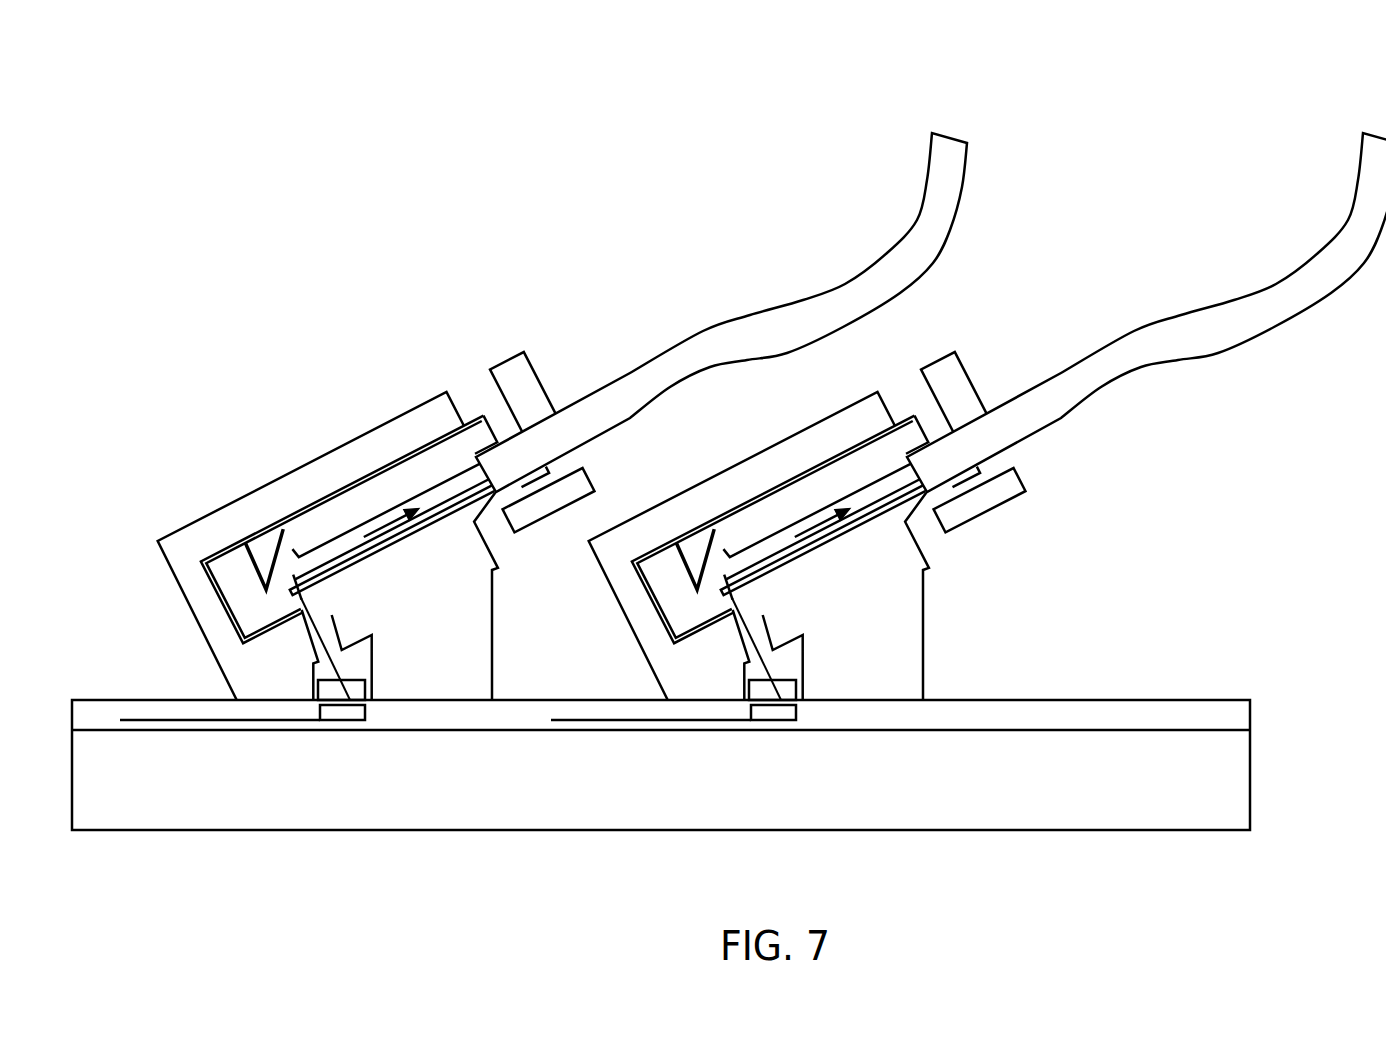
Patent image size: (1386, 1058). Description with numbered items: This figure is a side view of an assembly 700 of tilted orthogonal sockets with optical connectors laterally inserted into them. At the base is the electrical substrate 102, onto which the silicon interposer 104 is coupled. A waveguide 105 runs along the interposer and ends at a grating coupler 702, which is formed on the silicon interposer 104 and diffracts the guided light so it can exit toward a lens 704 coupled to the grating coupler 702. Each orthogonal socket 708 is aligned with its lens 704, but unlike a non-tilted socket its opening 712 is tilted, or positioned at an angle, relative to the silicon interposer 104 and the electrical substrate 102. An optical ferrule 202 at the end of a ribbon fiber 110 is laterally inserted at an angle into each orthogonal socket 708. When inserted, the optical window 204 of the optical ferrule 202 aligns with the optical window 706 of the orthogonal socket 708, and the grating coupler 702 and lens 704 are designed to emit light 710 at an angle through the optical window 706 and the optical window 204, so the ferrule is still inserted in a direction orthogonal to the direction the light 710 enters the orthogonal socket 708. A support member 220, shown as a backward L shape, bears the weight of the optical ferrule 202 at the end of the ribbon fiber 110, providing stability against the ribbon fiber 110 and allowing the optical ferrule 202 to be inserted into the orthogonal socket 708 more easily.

The tilted orthogonal sockets with optical connectors laterally inserted 700 is at (137, 72).
The electrical substrate 102 is at (681, 795).
The silicon interposer 104 is at (1255, 712).
The waveguide 105 is at (158, 722).
The ribbon fiber 110 is at (695, 335).
The optical ferrule 202 is at (477, 418).
The optical window 204 is at (243, 627).
The support member 220 is at (541, 380).
The grating coupler 702 is at (348, 722).
The lens 704 is at (370, 683).
The optical window 706 is at (325, 622).
The orthogonal socket 708 is at (340, 440).
The light 710 is at (332, 558).
The opening 712 is at (232, 550).